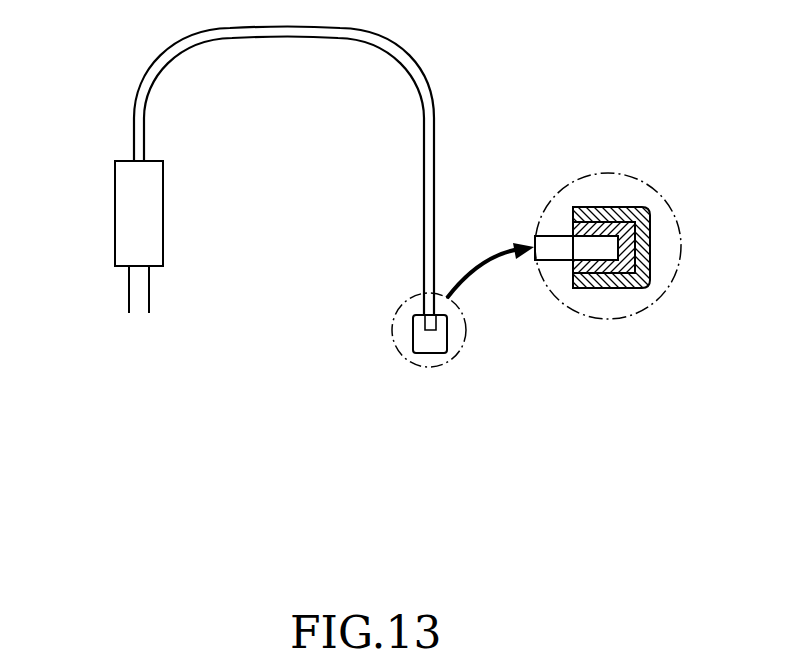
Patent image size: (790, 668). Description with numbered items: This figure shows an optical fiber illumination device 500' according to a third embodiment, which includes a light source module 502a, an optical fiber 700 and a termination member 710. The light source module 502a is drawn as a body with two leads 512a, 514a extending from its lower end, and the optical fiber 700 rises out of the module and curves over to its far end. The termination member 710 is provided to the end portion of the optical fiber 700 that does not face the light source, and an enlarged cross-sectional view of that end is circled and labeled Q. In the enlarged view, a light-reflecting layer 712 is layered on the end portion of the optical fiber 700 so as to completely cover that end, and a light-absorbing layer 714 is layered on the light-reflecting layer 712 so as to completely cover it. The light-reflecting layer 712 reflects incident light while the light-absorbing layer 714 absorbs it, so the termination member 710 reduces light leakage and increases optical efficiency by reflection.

The optical fiber illumination device 500' is at (390, 220).
The light source module 502a is at (106, 218).
The lead wire 512a is at (150, 296).
The lead wire 514a is at (129, 294).
The optical fiber 700 is at (444, 135).
The termination member 710 is at (402, 298).
The light-reflecting layer 712 is at (645, 255).
The light-absorbing layer 714 is at (650, 220).